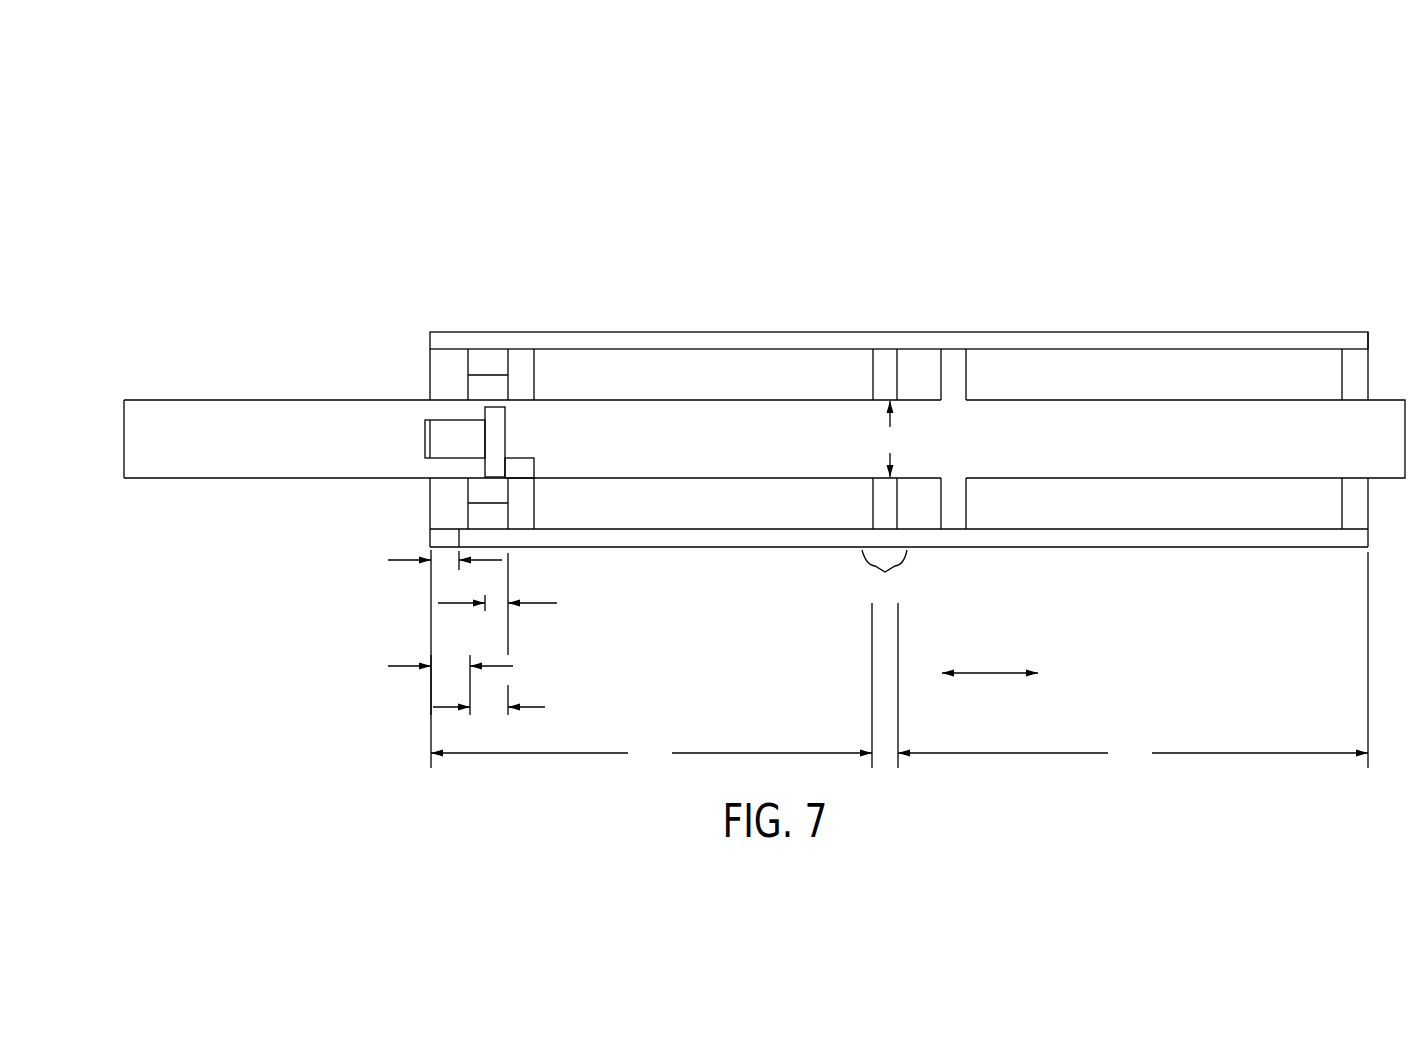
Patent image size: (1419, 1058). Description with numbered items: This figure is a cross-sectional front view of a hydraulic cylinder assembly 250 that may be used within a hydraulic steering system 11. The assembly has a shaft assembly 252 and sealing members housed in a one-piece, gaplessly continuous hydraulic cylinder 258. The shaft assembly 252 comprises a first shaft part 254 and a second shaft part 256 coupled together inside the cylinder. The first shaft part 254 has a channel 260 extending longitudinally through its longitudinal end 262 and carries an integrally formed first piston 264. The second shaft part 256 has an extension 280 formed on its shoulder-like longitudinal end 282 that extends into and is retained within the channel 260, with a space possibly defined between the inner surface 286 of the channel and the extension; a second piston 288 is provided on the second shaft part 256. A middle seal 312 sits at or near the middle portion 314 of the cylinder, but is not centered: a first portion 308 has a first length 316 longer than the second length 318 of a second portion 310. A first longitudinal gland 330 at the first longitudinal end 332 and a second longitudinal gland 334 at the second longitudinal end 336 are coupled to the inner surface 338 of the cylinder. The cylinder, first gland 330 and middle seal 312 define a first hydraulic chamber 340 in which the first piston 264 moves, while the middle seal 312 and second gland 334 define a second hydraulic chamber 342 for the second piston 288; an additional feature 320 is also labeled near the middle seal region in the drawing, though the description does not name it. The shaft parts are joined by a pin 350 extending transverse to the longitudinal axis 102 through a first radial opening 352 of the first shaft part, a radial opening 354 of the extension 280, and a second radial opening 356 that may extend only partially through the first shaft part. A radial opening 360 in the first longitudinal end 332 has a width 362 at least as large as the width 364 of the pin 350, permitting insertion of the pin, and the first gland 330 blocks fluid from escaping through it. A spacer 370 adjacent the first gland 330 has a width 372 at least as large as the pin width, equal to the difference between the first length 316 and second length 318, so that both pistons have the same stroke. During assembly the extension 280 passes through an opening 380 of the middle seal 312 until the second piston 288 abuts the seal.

The hydraulic steering system 11 is at (1082, 145).
The longitudinal axis 102 is at (993, 672).
The hydraulic cylinder assembly 250 is at (957, 202).
The shaft assembly 252 is at (713, 383).
The first shaft part 254 is at (197, 437).
The second shaft part 256 is at (1182, 427).
The hydraulic cylinder 258 is at (1083, 325).
The channel 260 is at (430, 435).
The longitudinal end 262 is at (537, 372).
The first piston 264 is at (518, 360).
The extension 280 is at (466, 412).
The longitudinal end 282 is at (537, 415).
The inner surface 286 is at (425, 448).
The second piston 288 is at (960, 373).
The first portion 308 is at (703, 550).
The second portion 310 is at (1130, 555).
The middle seal 312 is at (886, 347).
The middle portion 314 is at (884, 659).
The first length 316 is at (651, 753).
The second length 318 is at (1133, 660).
The cavity 320 is at (878, 403).
The first longitudinal gland 330 is at (427, 360).
The first longitudinal end 332 is at (355, 285).
The second longitudinal gland 334 is at (1382, 360).
The second longitudinal end 336 is at (1355, 297).
The inner surface 338 is at (450, 353).
The first hydraulic chamber 340 is at (613, 522).
The second hydraulic chamber 342 is at (1042, 508).
The pin 350 is at (515, 438).
The first radial opening 352 is at (505, 476).
The radial opening 354 is at (505, 458).
The second radial opening 356 is at (507, 413).
The radial opening 360 is at (440, 538).
The width 362 is at (397, 562).
The width 364 is at (457, 603).
The spacer 370 is at (482, 513).
The width 372 is at (545, 707).
The opening 380 is at (873, 480).